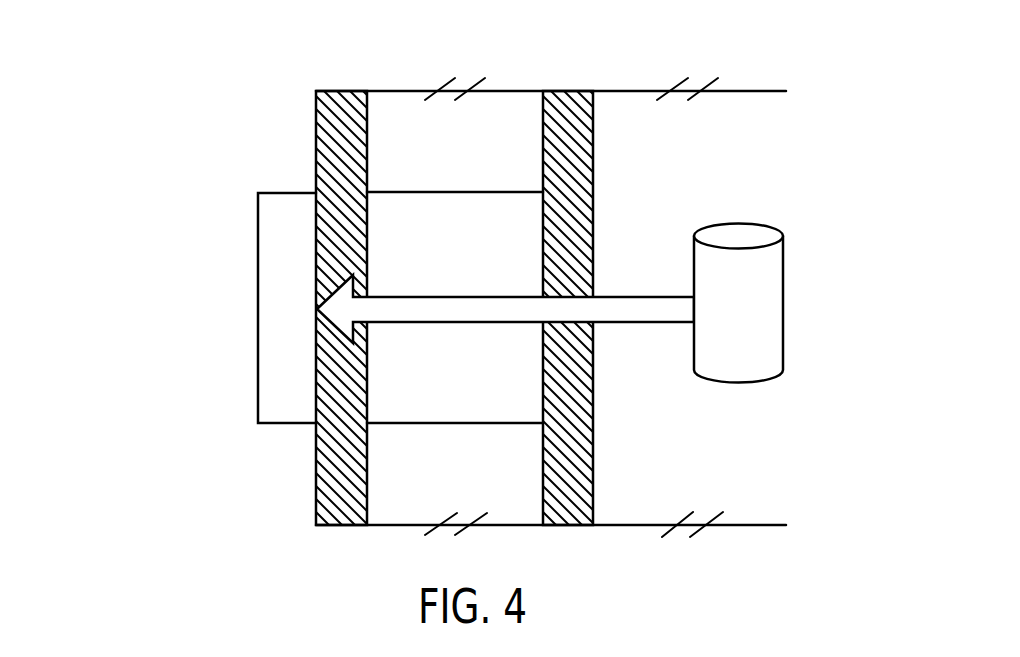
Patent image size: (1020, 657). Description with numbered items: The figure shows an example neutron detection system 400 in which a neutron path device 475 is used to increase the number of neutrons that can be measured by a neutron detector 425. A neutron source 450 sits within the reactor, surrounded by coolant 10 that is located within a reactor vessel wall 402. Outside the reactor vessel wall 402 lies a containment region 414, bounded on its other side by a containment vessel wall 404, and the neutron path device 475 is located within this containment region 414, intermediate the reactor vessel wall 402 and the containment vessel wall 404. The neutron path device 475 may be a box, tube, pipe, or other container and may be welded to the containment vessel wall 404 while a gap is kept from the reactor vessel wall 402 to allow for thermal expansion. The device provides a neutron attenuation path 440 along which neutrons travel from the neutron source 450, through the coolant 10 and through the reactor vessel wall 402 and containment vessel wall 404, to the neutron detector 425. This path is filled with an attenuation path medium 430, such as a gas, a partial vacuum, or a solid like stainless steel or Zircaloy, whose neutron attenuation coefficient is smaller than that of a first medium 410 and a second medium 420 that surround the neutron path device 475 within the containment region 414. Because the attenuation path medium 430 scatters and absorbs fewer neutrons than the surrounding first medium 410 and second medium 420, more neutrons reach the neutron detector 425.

The coolant 10 is at (722, 477).
The neutron detection system 400 is at (263, 472).
The reactor vessel wall 402 is at (600, 168).
The containment vessel wall 404 is at (303, 147).
The first medium 410 is at (428, 142).
The containment region 414 is at (402, 88).
The second medium 420 is at (475, 495).
The neutron detector 425 is at (243, 273).
The attenuation path medium 430 is at (475, 378).
The neutron attenuation path 440 is at (449, 294).
The neutron source 450 is at (755, 223).
The neutron path device 475 is at (425, 191).